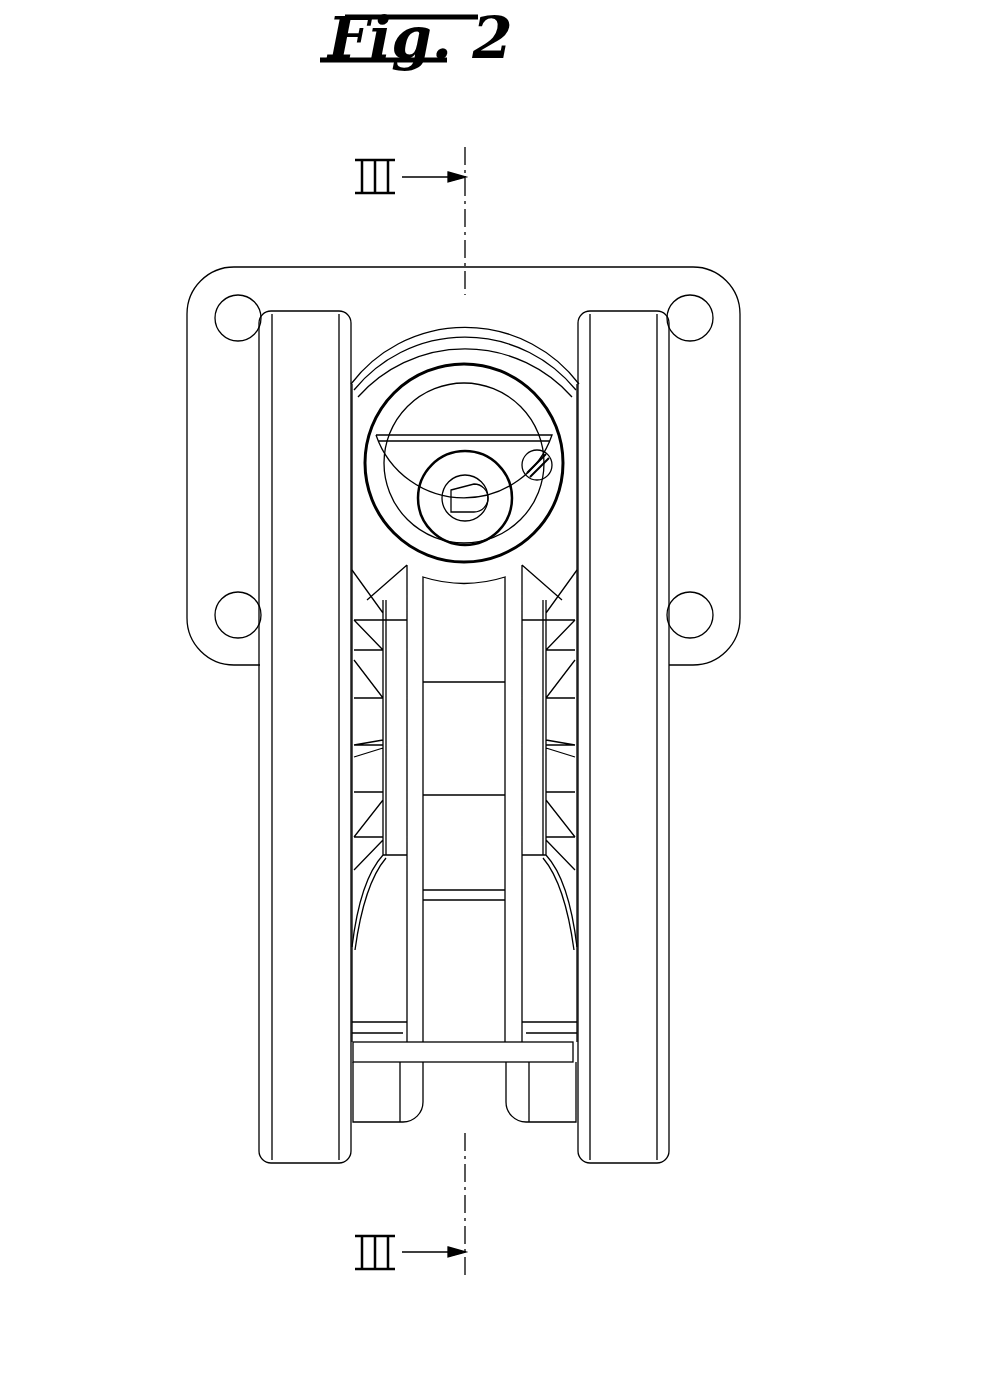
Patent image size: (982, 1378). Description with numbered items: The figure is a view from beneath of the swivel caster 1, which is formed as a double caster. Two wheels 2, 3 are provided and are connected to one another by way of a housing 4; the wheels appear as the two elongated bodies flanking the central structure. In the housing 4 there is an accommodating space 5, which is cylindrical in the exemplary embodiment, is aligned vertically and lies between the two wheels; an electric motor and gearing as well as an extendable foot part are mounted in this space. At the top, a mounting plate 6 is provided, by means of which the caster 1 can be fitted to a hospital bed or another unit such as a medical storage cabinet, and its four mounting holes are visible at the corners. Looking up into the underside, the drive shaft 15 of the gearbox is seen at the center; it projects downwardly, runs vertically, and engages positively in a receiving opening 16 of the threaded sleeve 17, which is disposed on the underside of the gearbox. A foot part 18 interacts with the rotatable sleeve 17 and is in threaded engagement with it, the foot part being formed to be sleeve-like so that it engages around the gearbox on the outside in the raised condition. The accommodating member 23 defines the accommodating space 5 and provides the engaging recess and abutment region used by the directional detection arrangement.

The swivel caster 1 is at (185, 212).
The wheel 2 is at (300, 870).
The wheel 3 is at (630, 879).
The housing 4 is at (512, 930).
The accommodating space 5 is at (412, 383).
The mounting plate 6 is at (718, 375).
The drive shaft 15 is at (468, 500).
The receiving opening 16 is at (487, 490).
The threaded sleeve 17 is at (502, 520).
The foot part 18 is at (390, 470).
The accommodating member 23 is at (515, 370).